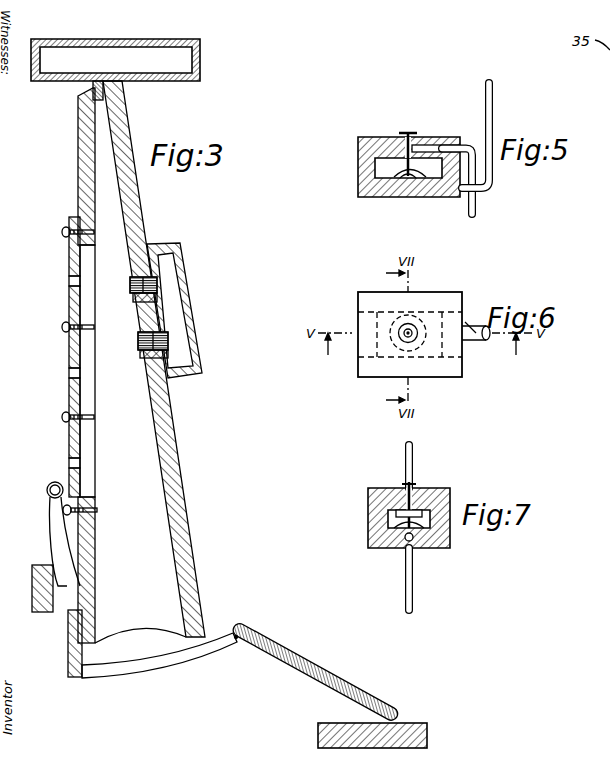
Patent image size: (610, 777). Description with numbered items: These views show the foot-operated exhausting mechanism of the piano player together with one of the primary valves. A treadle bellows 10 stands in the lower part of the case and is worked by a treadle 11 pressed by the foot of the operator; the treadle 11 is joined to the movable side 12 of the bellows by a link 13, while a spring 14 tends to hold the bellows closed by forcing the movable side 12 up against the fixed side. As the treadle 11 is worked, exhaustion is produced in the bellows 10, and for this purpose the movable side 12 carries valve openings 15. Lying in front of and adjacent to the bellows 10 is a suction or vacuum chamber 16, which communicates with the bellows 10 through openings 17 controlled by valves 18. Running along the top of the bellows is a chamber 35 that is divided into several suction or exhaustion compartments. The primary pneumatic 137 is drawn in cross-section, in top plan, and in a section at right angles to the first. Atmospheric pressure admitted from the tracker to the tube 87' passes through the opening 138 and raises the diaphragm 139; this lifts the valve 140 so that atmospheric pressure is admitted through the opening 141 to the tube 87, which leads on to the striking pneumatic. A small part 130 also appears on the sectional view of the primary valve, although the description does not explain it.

In FIG. 3, the chamber 35 is at (146, 40).
In FIG. 3, the treadle bellows 10 is at (170, 470).
In FIG. 3, the movable side 12 is at (80, 166).
In FIG. 3, the valve openings 15 is at (83, 328).
In FIG. 3, the link 13 is at (162, 667).
In FIG. 3, the treadle 11 is at (318, 662).
In FIG. 3, the spring 14 is at (52, 520).
In FIG. 3, the suction or vacuum chamber 16 is at (198, 318).
In FIG. 3, the openings 17 is at (130, 282).
In FIG. 3, the valves 18 is at (134, 297).
In FIG. 5, the primary pneumatic 137 is at (361, 160).
In FIG. 6, the primary pneumatic 137 is at (380, 370).
In FIG. 7, the primary pneumatic 137 is at (368, 497).
In FIG. 5, the opening 141 is at (435, 146).
In FIG. 7, the opening 141 is at (420, 490).
In FIG. 5, the valve 140 is at (409, 130).
In FIG. 6, the valve 140 is at (414, 326).
In FIG. 7, the valve 140 is at (405, 484).
In FIG. 5, the opening 138 is at (406, 181).
In FIG. 5, the diaphragm 139 is at (414, 172).
In FIG. 7, the diaphragm 139 is at (402, 530).
In FIG. 5, the tube 87 is at (498, 182).
In FIG. 6, the tube 87 is at (476, 317).
In FIG. 7, the tube 87 is at (429, 579).
In FIG. 5, the tube 87' is at (502, 135).
In FIG. 7, the tube 87' is at (435, 464).
In FIG. 7, the eyelet 130 is at (416, 540).